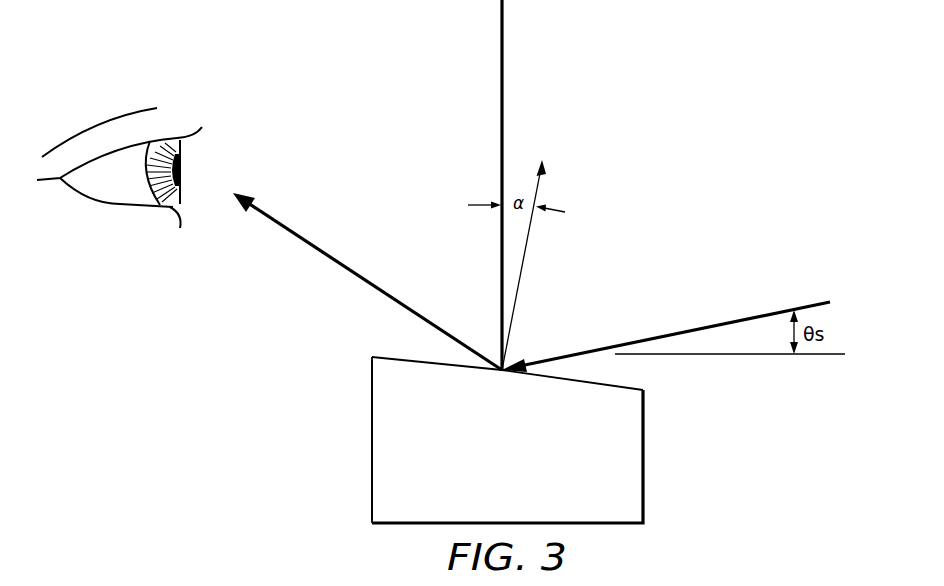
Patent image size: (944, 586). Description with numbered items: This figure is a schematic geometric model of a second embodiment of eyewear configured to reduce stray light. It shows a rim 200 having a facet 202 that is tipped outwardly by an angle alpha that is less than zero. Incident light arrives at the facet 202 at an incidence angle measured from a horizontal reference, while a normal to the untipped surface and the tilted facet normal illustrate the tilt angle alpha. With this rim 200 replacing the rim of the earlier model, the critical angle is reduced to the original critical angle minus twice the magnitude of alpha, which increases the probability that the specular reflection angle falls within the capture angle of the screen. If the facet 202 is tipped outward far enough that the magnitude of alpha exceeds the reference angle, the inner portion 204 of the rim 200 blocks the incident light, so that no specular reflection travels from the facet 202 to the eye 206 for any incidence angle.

The rim 200 is at (643, 455).
The facet 202 is at (628, 390).
The inner portion 204 is at (372, 438).
The eye 206 is at (115, 112).